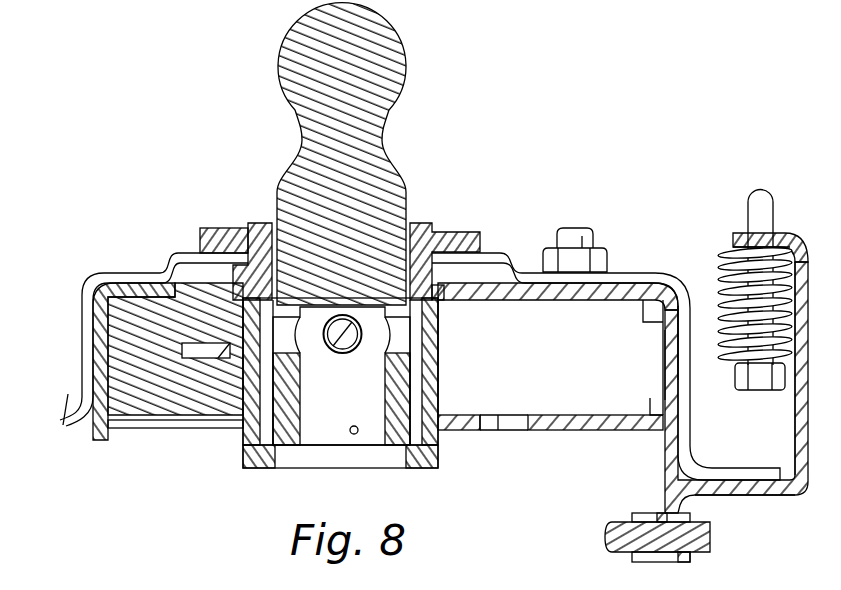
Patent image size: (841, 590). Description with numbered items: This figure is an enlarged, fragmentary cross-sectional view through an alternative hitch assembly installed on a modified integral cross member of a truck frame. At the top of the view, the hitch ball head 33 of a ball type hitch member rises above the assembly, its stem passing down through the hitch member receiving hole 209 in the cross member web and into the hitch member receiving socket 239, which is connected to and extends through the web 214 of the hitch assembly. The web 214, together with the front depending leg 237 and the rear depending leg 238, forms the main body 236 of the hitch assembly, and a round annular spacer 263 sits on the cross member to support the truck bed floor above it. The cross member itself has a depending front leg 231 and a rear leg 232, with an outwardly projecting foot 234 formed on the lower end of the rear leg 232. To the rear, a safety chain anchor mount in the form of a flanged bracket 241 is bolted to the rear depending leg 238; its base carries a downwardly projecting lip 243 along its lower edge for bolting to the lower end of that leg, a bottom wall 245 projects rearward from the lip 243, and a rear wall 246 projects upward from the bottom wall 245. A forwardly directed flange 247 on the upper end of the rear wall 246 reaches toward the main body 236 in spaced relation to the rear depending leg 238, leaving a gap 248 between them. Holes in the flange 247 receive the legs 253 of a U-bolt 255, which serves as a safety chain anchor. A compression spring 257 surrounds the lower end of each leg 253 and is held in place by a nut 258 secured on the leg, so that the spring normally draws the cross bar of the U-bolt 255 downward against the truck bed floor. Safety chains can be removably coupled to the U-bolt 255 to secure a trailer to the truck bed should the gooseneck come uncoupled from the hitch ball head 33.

The hitch ball head 33 is at (402, 70).
The hitch member receiving hole 209 is at (248, 228).
The main body 236 is at (100, 280).
The front leg 231 is at (82, 347).
The front depending leg 237 is at (100, 365).
The annular spacer 263 is at (458, 232).
The gap 248 is at (703, 280).
The forwardly directed flange 247 is at (722, 237).
The flanged bracket 241 is at (725, 217).
The U-bolt 255 is at (752, 185).
The compression spring 257 is at (792, 236).
The web 214 is at (508, 293).
The rear leg 232 is at (663, 337).
The rear depending leg 238 is at (660, 373).
The hitch member receiving socket 239 is at (445, 395).
The leg 253 is at (757, 310).
The nut 258 is at (740, 378).
The rear wall 246 is at (790, 413).
The foot 234 is at (748, 473).
The bottom wall 245 is at (740, 495).
The lip 243 is at (685, 562).